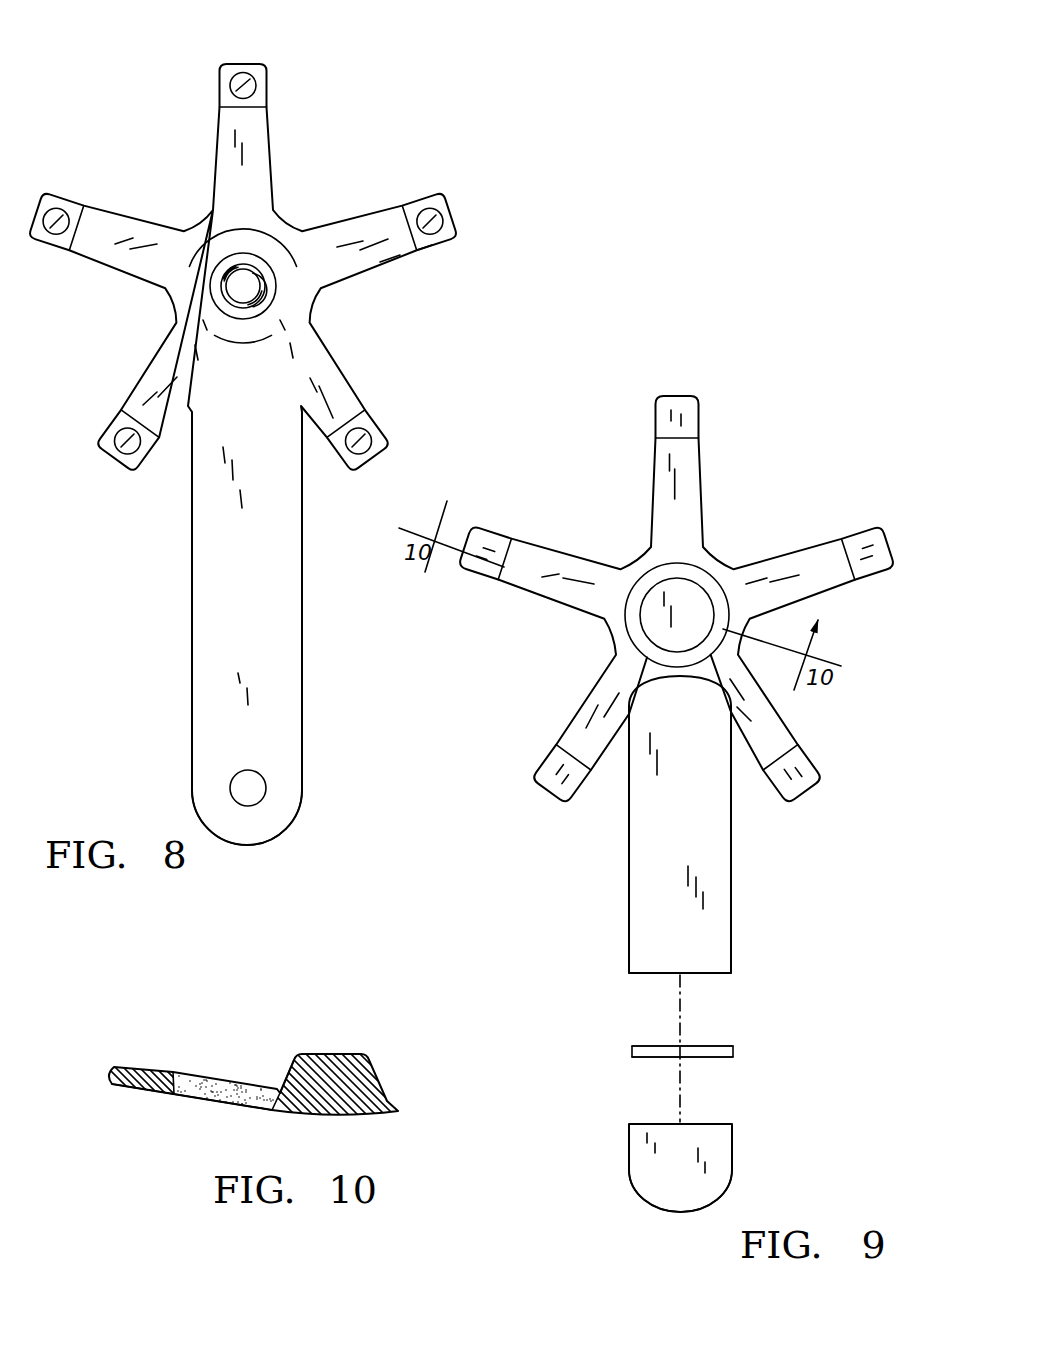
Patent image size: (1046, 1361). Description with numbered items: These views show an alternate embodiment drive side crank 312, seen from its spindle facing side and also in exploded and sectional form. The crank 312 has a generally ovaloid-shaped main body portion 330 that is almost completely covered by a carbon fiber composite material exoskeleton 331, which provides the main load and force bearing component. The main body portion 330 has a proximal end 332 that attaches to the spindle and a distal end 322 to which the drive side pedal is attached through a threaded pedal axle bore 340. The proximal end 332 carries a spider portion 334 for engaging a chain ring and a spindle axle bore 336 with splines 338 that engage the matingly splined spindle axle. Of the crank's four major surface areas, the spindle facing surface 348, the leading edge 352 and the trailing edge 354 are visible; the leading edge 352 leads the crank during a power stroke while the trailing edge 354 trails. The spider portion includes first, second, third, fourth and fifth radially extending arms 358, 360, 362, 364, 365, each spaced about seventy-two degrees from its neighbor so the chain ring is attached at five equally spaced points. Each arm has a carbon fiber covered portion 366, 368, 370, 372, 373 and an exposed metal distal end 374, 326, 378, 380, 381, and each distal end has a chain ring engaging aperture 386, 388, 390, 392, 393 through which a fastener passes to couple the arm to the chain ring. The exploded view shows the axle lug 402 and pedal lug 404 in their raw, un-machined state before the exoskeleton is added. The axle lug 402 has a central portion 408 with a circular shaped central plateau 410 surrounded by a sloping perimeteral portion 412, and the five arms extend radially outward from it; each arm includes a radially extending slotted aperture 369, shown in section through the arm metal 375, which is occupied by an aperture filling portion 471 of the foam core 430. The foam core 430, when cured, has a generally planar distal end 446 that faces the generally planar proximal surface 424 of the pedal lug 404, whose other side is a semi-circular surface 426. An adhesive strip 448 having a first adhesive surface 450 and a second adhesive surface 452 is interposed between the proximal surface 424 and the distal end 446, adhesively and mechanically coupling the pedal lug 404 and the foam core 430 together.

In FIG. 8, the drive side crank 312 is at (418, 127).
In FIG. 10, the drive side crank 312 is at (388, 987).
In FIG. 8, the distal end 322 is at (248, 853).
In FIG. 8, the spider arm tab 326 is at (45, 203).
In FIG. 8, the main body portion 330 is at (170, 593).
In FIG. 8, the carbon fiber composite material exoskeleton 331 is at (192, 657).
In FIG. 8, the proximal end 332 is at (373, 170).
In FIG. 8, the spider portion 334 is at (487, 207).
In FIG. 8, the spindle axle bore 336 is at (262, 268).
In FIG. 8, the splines 338 is at (225, 277).
In FIG. 8, the pedal bore 340 is at (262, 784).
In FIG. 8, the spindle facing surface 348 is at (272, 631).
In FIG. 8, the leading edge 352 is at (190, 568).
In FIG. 8, the trailing edge 354 is at (307, 592).
In FIG. 8, the first radially extending arm 358 is at (107, 417).
In FIG. 8, the second radially extending arm 360 is at (120, 172).
In FIG. 10, the second radially extending arm 360 is at (205, 1108).
In FIG. 8, the third radially extending arm 362 is at (285, 122).
In FIG. 8, the fourth radially extending arm 364 is at (408, 273).
In FIG. 8, the fifth radially extending arm 365 is at (357, 385).
In FIG. 8, the carbon fiber covered portion 366 is at (173, 360).
In FIG. 8, the carbon fiber covered portion 368 is at (100, 223).
In FIG. 8, the carbon fiber covered portion 370 is at (227, 185).
In FIG. 8, the carbon fiber covered portion 372 is at (322, 230).
In FIG. 8, the carbon fiber covered portion 373 is at (362, 382).
In FIG. 8, the exposed metal distal end 374 is at (116, 457).
In FIG. 8, the exposed metal distal end 378 is at (260, 72).
In FIG. 8, the exposed metal distal end 380 is at (457, 236).
In FIG. 8, the exposed metal distal end 381 is at (385, 444).
In FIG. 8, the chain ring engaging aperture 386 is at (152, 443).
In FIG. 8, the chain ring engaging aperture 388 is at (52, 240).
In FIG. 8, the chain ring engaging aperture 390 is at (228, 90).
In FIG. 8, the chain ring engaging aperture 392 is at (434, 212).
In FIG. 8, the chain ring engaging aperture 393 is at (383, 414).
In FIG. 9, the axle lug 402 is at (766, 553).
In FIG. 10, the axle lug 402 is at (390, 1063).
In FIG. 9, the pedal lug 404 is at (746, 1166).
In FIG. 9, the central portion 408 is at (724, 551).
In FIG. 9, the central plateau 410 is at (670, 589).
In FIG. 10, the central plateau 410 is at (357, 1053).
In FIG. 9, the sloping perimeteral portion 412 is at (644, 582).
In FIG. 10, the sloping perimeteral portion 412 is at (287, 1070).
In FIG. 9, the planar proximal surface 424 is at (707, 1123).
In FIG. 9, the semi-circular surface 426 is at (648, 1205).
In FIG. 9, the foam core 430 is at (733, 886).
In FIG. 9, the planar distal end 446 is at (692, 977).
In FIG. 9, the adhesive strip 448 is at (752, 1044).
In FIG. 9, the first adhesive surface 450 is at (664, 1049).
In FIG. 9, the second adhesive surface 452 is at (656, 1059).
In FIG. 10, the radially extending slotted aperture 369 is at (186, 1074).
In FIG. 10, the arm core 375 is at (147, 1064).
In FIG. 10, the aperture filling portion 471 is at (223, 1096).